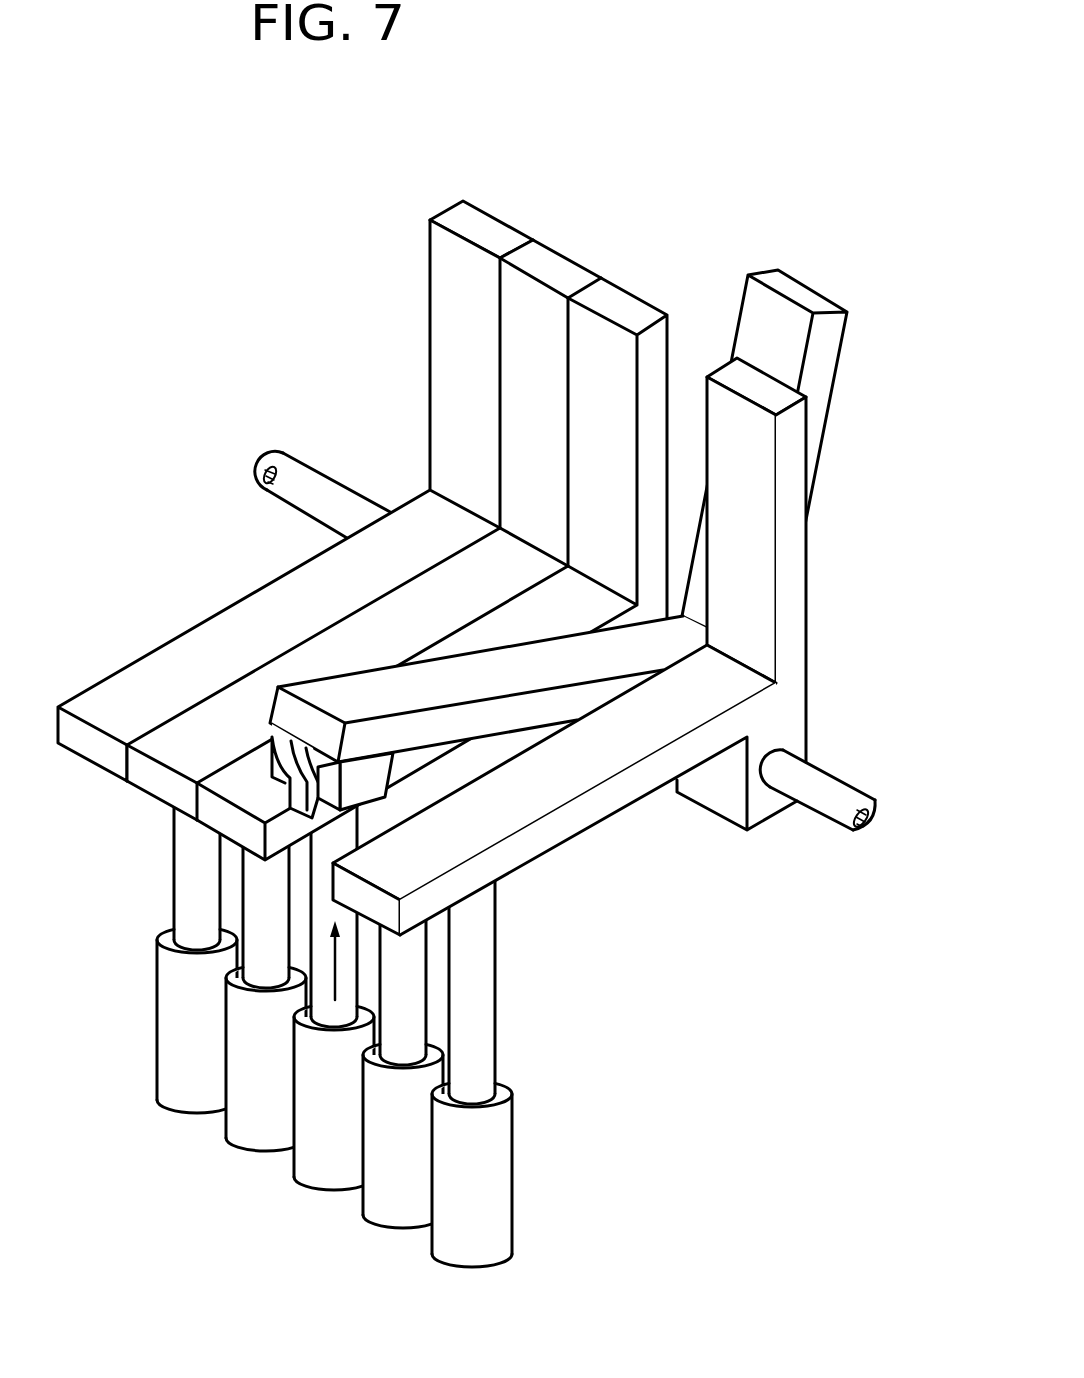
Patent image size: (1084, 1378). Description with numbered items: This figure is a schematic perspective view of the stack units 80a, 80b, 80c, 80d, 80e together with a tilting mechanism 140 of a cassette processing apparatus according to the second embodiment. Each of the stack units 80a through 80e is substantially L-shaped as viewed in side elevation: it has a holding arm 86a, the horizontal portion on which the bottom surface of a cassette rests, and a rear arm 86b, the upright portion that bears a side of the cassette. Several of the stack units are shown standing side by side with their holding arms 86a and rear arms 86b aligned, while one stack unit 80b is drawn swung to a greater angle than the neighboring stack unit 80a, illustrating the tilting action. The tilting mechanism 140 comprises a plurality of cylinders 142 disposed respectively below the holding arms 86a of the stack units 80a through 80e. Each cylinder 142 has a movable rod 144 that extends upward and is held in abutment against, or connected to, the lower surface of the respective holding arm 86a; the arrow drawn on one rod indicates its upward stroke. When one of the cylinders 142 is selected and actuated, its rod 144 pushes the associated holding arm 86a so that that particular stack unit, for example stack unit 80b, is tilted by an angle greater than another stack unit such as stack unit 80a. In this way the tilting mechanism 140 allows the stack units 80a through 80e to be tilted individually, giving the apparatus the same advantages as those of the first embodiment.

The stack unit 80a is at (766, 371).
The stack unit 80b is at (803, 287).
The stack unit 80c is at (628, 290).
The stack unit 80d is at (558, 252).
The stack unit 80e is at (490, 215).
The holding arm 86a is at (517, 622).
The rear arm 86b is at (533, 360).
The tilting mechanism 140 is at (523, 897).
The cylinder 142 is at (485, 1163).
The movable rod 144 is at (832, 787).